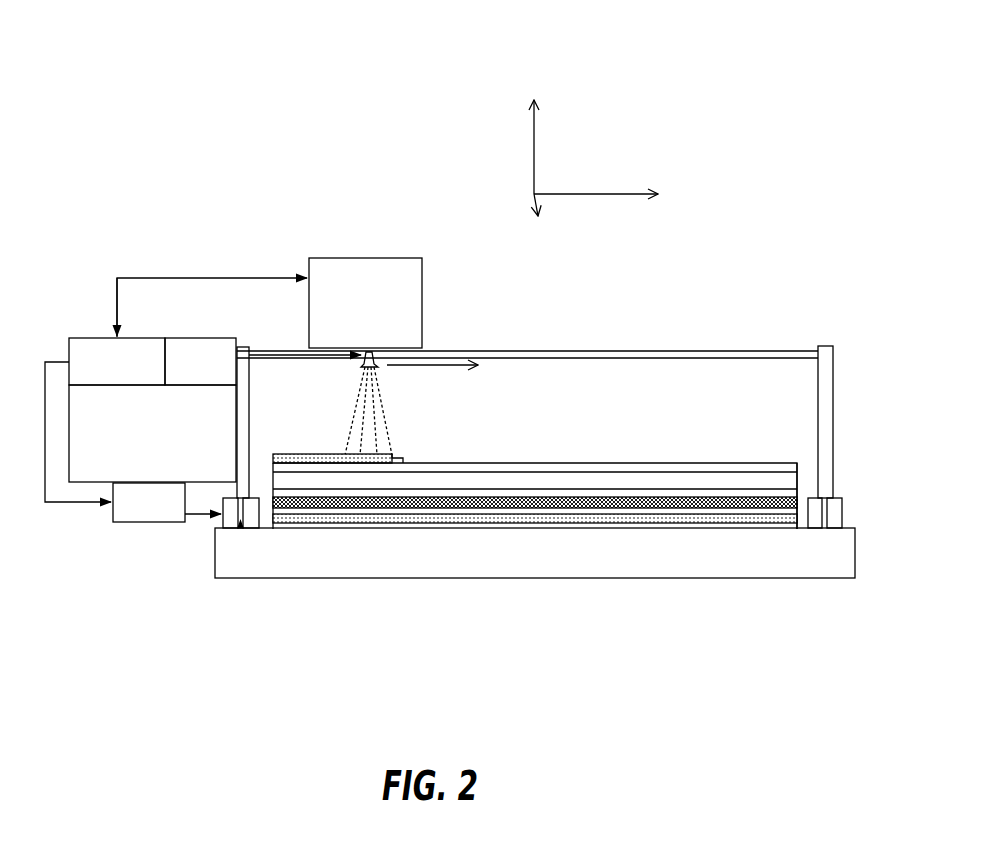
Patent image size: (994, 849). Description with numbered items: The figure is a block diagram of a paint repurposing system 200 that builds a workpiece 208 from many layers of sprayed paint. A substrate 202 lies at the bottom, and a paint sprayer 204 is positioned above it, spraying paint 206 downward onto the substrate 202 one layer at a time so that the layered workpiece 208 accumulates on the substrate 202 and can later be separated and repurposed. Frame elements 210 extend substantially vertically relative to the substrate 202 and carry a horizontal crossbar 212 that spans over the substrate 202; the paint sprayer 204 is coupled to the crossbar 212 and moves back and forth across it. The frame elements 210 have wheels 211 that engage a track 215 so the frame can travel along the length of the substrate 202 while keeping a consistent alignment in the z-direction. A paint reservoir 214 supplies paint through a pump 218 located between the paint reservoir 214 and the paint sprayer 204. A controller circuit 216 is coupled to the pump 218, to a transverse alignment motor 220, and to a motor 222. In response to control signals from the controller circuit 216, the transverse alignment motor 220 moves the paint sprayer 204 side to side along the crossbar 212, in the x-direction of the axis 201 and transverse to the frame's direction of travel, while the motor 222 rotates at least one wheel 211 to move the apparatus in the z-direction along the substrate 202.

The paint repurposing system 200 is at (146, 44).
The axis 201 is at (532, 171).
The substrate 202 is at (308, 579).
The paint sprayer 204 is at (360, 364).
The paint 206 is at (409, 417).
The workpiece 208 is at (634, 446).
The frame elements 210 is at (822, 345).
The wheels 211 is at (807, 527).
The crossbar 212 is at (710, 348).
The paint reservoir 214 is at (152, 433).
The track 215 is at (824, 524).
The controller circuit 216 is at (93, 338).
The pump 218 is at (193, 338).
The transverse alignment motor 220 is at (340, 258).
The motor 222 is at (133, 522).